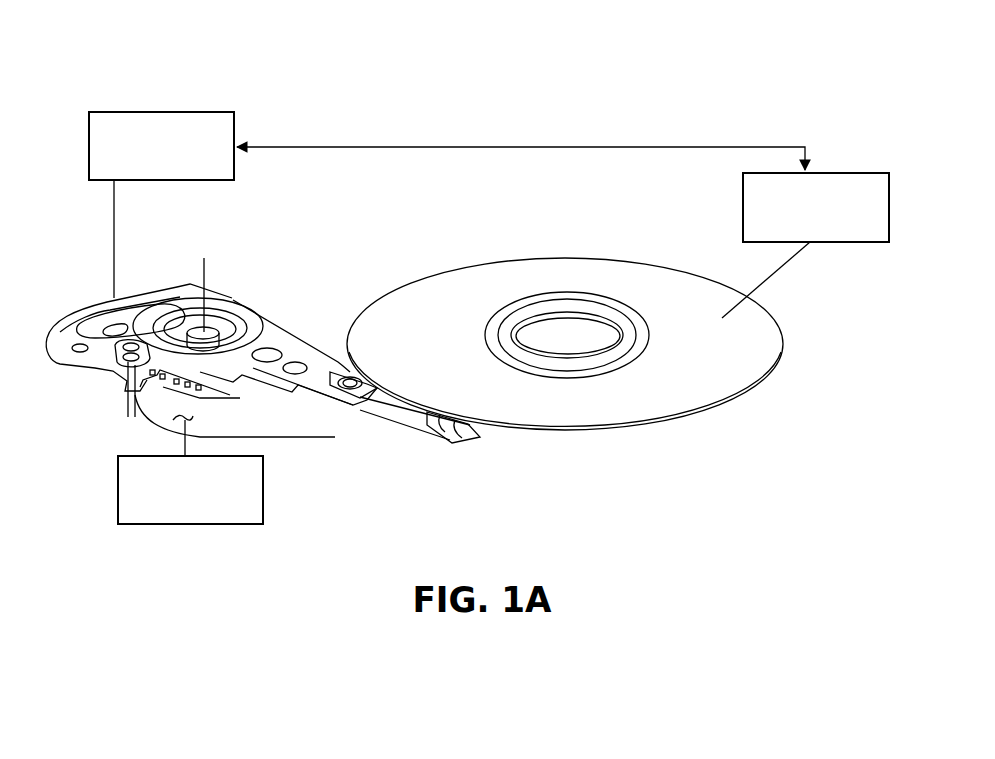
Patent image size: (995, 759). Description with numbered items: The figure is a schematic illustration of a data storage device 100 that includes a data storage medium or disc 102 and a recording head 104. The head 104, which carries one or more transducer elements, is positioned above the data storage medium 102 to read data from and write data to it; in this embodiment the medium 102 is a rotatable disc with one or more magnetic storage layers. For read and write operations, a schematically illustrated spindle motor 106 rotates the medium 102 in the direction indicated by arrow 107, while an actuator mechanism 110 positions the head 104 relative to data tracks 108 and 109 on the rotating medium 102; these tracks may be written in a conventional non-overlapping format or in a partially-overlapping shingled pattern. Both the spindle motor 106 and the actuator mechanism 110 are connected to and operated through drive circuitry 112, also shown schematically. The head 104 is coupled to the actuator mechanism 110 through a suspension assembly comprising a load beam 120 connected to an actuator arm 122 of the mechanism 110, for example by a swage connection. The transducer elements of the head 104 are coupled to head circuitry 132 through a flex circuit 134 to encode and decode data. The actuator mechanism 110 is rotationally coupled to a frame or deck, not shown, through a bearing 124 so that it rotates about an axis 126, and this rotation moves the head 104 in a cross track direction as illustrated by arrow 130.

The data storage device 100 is at (700, 112).
The data storage medium 102 is at (664, 290).
The recording head 104 is at (472, 433).
The spindle motor 106 is at (853, 173).
The arrow 107 is at (442, 304).
The data track 108 is at (633, 343).
The data track 109 is at (582, 295).
The actuator mechanism 110 is at (229, 284).
The drive circuitry 112 is at (205, 112).
The load beam 120 is at (376, 398).
The actuator arm 122 is at (301, 328).
The bearing 124 is at (198, 330).
The axis 126 is at (203, 278).
The arrow 130 is at (436, 463).
The head circuitry 132 is at (118, 487).
The flex circuit 134 is at (212, 426).